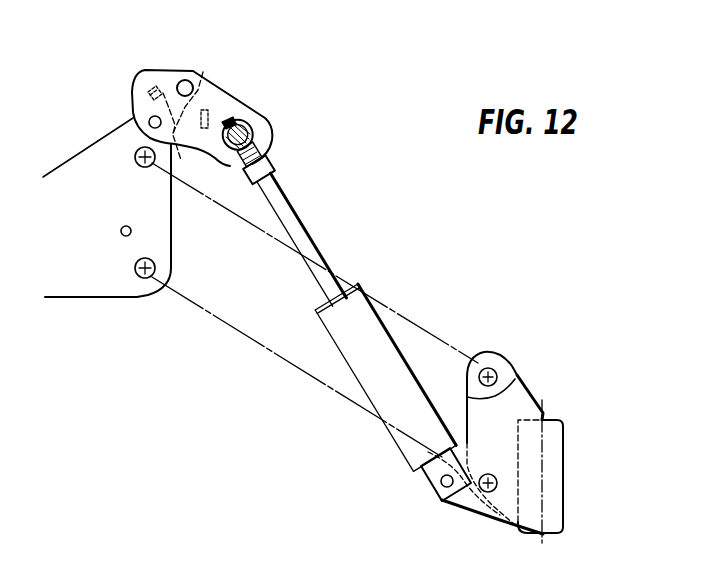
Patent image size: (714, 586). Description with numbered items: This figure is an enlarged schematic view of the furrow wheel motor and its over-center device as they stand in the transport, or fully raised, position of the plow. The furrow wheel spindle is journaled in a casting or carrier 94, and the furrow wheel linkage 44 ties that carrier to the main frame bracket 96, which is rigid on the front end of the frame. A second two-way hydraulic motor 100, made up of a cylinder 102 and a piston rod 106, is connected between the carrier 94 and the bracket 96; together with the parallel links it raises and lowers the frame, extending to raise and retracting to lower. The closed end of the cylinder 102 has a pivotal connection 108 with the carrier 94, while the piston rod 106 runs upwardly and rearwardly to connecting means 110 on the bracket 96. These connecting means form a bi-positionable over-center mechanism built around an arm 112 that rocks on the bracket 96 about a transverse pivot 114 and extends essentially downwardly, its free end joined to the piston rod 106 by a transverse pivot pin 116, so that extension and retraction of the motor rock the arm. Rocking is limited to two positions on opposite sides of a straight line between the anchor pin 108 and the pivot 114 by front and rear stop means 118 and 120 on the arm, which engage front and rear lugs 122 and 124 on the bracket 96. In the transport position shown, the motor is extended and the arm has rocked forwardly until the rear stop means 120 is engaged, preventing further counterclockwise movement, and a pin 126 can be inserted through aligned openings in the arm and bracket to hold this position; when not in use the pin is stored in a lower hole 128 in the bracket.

The furrow wheel linkage 44 is at (192, 303).
The carrier 94 is at (564, 452).
The main frame bracket 96 is at (93, 285).
The hydraulic motor 100 is at (393, 338).
The cylinder 102 is at (371, 304).
The piston rod 106 is at (296, 213).
The pivotal connection 108 is at (441, 490).
The connecting means 110 is at (118, 78).
The arm 112 is at (267, 121).
The transverse pivot 114 is at (193, 81).
The transverse pivot pin 116 is at (254, 138).
The front stop means 118 is at (212, 112).
The rear stop means 120 is at (148, 87).
The front lug 122 is at (180, 155).
The rear lug 124 is at (163, 93).
The pin 126 is at (149, 123).
The lower hole 128 is at (120, 232).